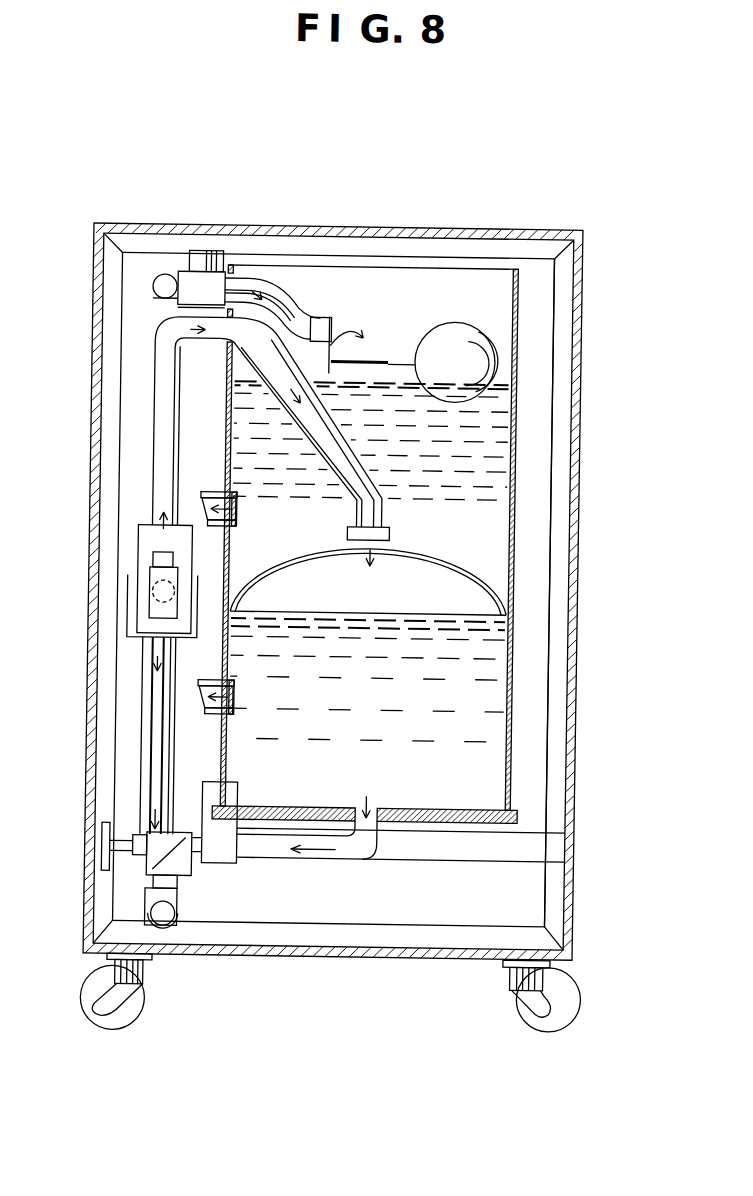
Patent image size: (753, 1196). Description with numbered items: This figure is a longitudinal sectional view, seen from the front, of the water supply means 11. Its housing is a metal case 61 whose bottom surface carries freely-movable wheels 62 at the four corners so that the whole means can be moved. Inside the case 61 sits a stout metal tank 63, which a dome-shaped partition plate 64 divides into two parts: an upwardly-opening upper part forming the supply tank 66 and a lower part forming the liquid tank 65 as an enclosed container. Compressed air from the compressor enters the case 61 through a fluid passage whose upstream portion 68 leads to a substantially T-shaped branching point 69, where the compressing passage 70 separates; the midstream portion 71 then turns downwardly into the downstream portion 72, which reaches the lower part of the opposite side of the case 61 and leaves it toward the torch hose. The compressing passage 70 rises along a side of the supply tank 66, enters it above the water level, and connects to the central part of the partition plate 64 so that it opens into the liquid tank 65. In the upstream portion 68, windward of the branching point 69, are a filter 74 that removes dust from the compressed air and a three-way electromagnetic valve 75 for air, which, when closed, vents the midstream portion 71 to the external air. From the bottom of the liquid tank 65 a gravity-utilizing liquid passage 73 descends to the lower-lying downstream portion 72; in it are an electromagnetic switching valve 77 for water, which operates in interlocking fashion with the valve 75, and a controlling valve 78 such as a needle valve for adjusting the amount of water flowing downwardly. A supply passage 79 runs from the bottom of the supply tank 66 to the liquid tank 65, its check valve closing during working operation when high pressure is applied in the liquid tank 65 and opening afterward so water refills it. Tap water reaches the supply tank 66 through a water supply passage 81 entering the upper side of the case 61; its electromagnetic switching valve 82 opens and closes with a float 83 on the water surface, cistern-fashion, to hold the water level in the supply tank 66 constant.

The water supply means 11 is at (338, 606).
The metal case 61 is at (584, 520).
The freely-movable wheels 62 is at (137, 1019).
The tank 63 is at (518, 661).
The dome-shaped partition plate 64 is at (450, 545).
The liquid tank 65 is at (500, 714).
The supply tank 66 is at (497, 466).
The upstream portion 68 is at (160, 499).
The branching point 69 is at (155, 595).
The compressing passage 70 is at (354, 459).
The midstream portion 71 is at (159, 752).
The downstream portion 72 is at (175, 914).
The liquid passage 73 is at (372, 854).
The filter 74 is at (149, 682).
The three-way electromagnetic valve 75 is at (143, 556).
The electromagnetic switching valve 77 is at (229, 855).
The controlling valve 78 is at (162, 849).
The supply passage 79 is at (242, 498).
The water supply passage 81 is at (160, 275).
The electromagnetic switching valve 82 is at (205, 290).
The float 83 is at (437, 328).